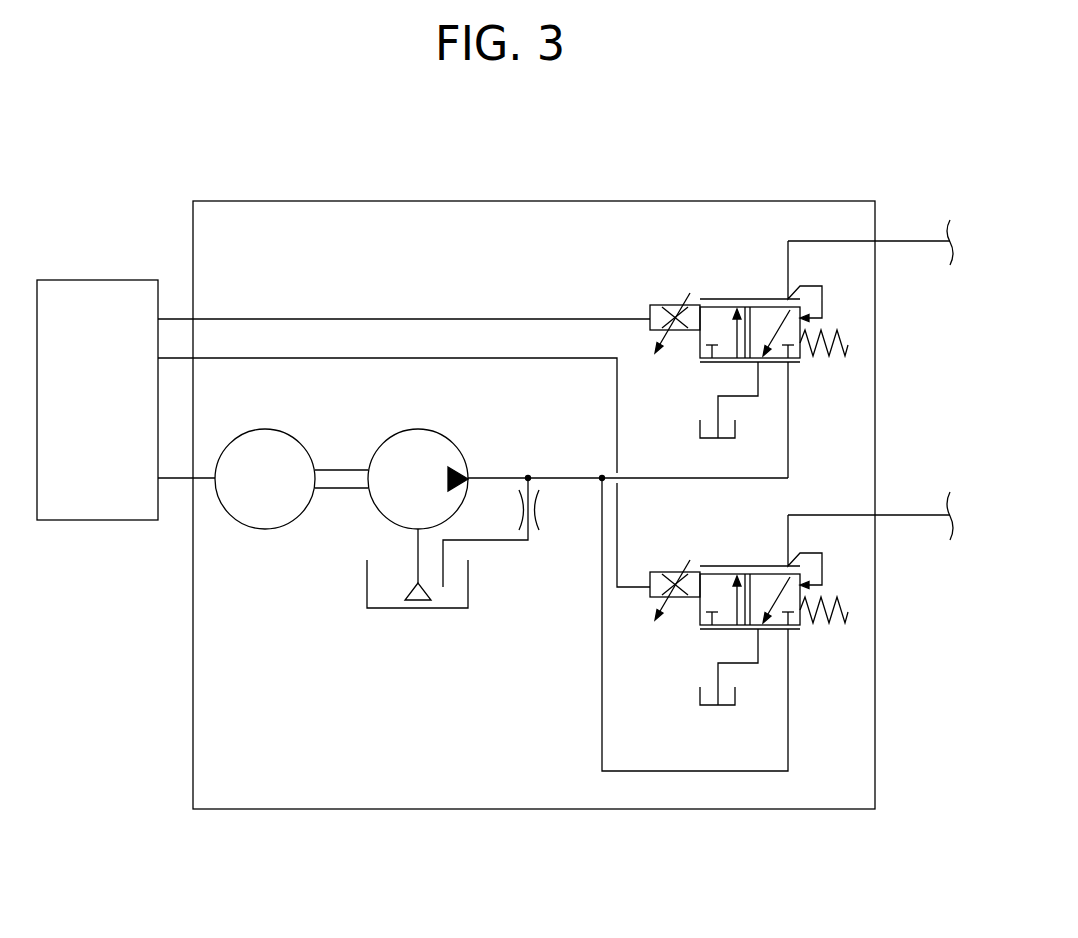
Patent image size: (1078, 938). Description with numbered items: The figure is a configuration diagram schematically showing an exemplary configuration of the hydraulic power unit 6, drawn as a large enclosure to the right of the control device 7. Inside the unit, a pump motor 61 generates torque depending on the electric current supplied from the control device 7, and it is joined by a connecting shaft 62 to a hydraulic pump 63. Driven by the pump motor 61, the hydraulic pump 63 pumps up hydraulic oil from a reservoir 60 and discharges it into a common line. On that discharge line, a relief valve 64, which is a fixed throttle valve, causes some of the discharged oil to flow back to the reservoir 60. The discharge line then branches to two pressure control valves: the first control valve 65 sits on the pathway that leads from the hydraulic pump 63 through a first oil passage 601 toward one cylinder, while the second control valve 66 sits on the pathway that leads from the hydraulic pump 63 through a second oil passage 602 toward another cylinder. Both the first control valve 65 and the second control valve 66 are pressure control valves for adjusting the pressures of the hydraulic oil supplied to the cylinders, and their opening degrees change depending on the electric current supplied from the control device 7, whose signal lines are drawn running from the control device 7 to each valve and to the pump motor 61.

The hydraulic power unit 6 is at (250, 200).
The control device 7 is at (75, 278).
The reservoir 60 is at (470, 585).
The pump motor 61 is at (258, 428).
The connecting shaft 62 is at (344, 468).
The hydraulic pump 63 is at (420, 428).
The relief valve 64 is at (540, 514).
The first control valve 65 is at (737, 298).
The second control valve 66 is at (737, 565).
The first oil passage 601 is at (896, 238).
The second oil passage 602 is at (895, 512).